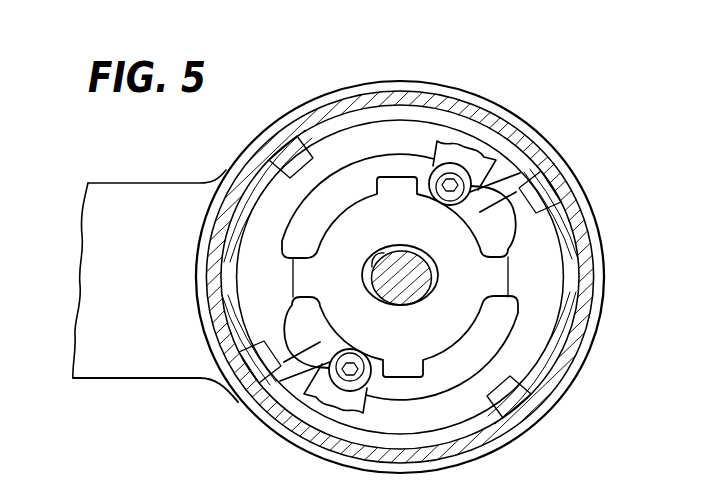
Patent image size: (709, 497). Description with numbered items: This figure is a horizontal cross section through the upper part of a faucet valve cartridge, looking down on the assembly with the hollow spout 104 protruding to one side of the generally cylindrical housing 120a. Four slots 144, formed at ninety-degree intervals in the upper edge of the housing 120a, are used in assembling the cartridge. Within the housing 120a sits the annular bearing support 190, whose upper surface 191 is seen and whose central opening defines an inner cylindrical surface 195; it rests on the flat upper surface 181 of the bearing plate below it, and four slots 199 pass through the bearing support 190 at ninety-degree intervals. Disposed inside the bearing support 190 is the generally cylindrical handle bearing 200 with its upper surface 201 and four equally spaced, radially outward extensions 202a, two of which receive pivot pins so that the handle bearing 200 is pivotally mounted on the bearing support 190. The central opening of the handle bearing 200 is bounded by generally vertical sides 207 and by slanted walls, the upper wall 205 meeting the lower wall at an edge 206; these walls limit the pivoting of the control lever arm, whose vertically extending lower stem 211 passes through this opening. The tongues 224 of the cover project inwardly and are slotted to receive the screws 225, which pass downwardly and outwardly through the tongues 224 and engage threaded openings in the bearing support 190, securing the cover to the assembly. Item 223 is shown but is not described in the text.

The spout 104 is at (142, 197).
The housing 120a is at (555, 210).
The slots 144 is at (293, 150).
The upper surface 181 is at (500, 340).
The bearing support 190 is at (574, 307).
The upper surface 191 is at (523, 357).
The inner cylindrical surface 195 is at (445, 388).
The slots 199 is at (320, 172).
The handle bearing 200 is at (522, 282).
The upper surface 201 is at (408, 350).
The extensions 202a is at (303, 287).
The upper wall 205 is at (438, 280).
The edge 206 is at (382, 252).
The sides 207 is at (398, 250).
The lower stem 211 is at (372, 278).
The inner housing ring 223 is at (600, 243).
The tongues 224 is at (430, 167).
The screws 225 is at (480, 155).